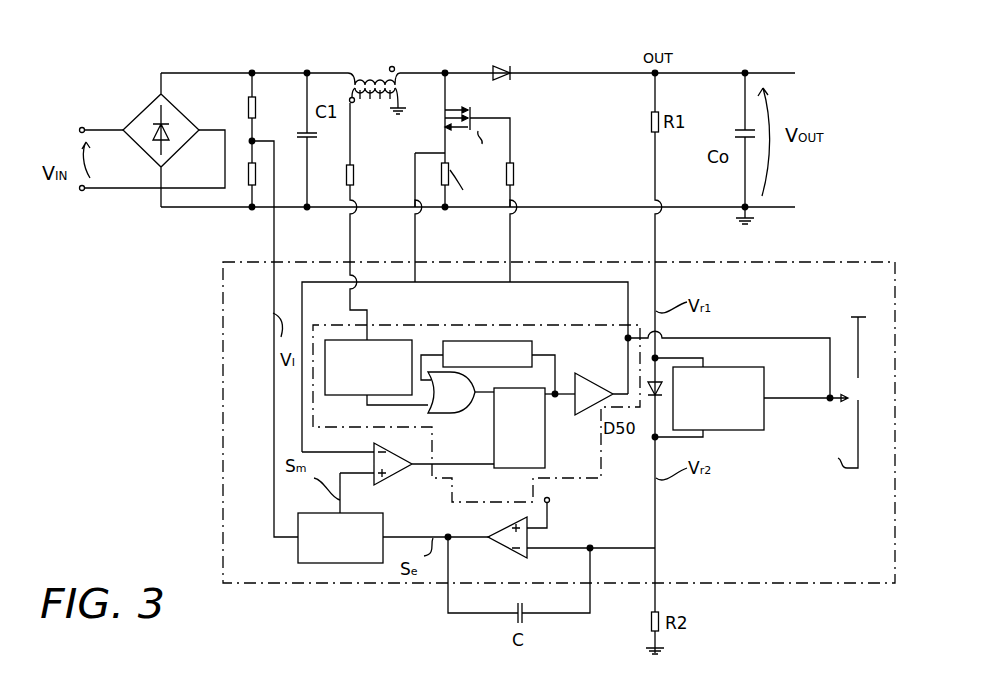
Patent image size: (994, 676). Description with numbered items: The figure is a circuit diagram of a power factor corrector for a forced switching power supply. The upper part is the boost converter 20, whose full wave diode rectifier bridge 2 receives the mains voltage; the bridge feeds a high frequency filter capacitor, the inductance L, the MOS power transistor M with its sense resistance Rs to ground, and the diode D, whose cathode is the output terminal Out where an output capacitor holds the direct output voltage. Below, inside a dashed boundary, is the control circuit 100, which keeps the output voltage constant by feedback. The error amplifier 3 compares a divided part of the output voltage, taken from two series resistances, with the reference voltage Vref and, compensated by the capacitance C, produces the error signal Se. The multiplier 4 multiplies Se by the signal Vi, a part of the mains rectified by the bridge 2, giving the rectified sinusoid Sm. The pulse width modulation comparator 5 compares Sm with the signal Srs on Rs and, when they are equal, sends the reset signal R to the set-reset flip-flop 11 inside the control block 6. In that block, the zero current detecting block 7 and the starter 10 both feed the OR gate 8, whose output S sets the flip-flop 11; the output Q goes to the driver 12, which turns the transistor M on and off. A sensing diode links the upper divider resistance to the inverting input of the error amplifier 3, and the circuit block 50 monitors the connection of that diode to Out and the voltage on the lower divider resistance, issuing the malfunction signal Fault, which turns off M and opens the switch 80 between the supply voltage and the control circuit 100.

The full wave diode rectifier bridge 2 is at (143, 123).
The converter 20 is at (330, 43).
The control circuit 100 is at (223, 384).
The control block 6 is at (438, 322).
The zero current detecting block 7 is at (385, 340).
The starter 10 is at (488, 341).
The OR gate 8 is at (450, 412).
The set-reset flip-flop 11 is at (530, 470).
The driver 12 is at (585, 388).
The pulse width modulation comparator 5 is at (402, 466).
The multiplier 4 is at (318, 513).
The error amplifier 3 is at (497, 546).
The circuit block 50 is at (706, 368).
The switch 80 is at (862, 383).